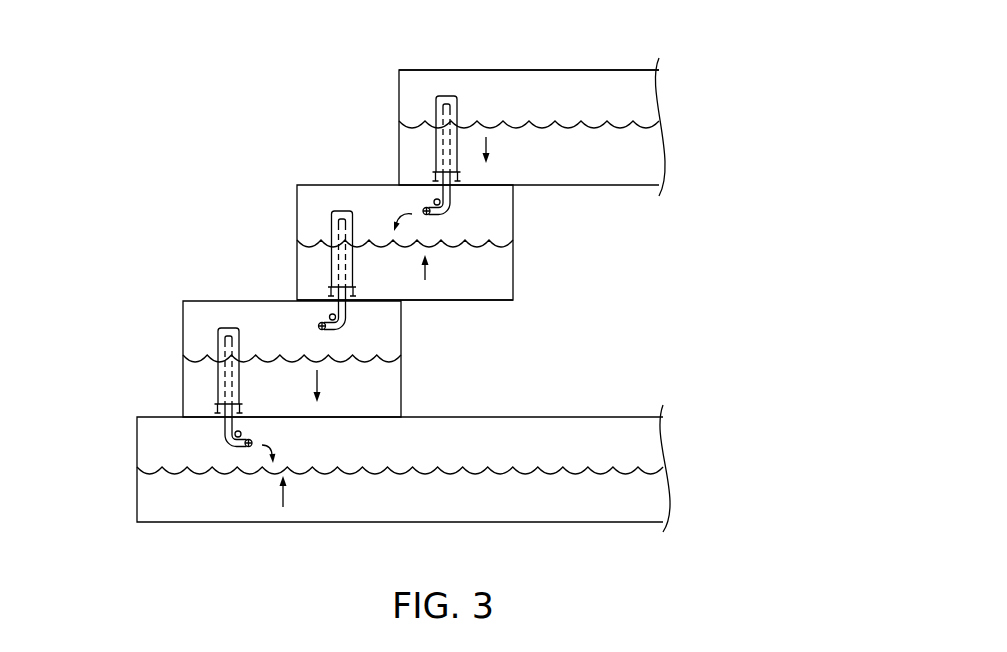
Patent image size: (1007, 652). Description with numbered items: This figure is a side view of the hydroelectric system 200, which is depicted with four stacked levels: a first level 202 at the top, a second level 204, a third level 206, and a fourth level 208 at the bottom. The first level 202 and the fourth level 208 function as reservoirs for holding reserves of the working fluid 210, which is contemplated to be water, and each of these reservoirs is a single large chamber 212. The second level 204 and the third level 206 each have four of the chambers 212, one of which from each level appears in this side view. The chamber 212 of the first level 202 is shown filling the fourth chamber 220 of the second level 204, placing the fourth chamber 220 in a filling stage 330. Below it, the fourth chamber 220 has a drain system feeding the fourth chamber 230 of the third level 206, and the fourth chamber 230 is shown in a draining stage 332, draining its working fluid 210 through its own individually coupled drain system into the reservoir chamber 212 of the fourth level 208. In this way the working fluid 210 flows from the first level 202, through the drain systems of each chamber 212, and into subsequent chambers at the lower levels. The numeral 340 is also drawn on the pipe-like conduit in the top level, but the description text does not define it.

The hydroelectric system 200 is at (135, 57).
The first level 202 is at (712, 152).
The second level 204 is at (572, 268).
The third level 206 is at (461, 368).
The fourth level 208 is at (731, 478).
The working fluid 210 is at (310, 272).
The chamber 212 is at (627, 94).
The fourth chamber 220 is at (505, 217).
The fourth chamber 230 is at (392, 339).
The filling stage 330 is at (378, 206).
The draining stage 332 is at (252, 458).
The conduit housing / standpipe 340 is at (436, 110).